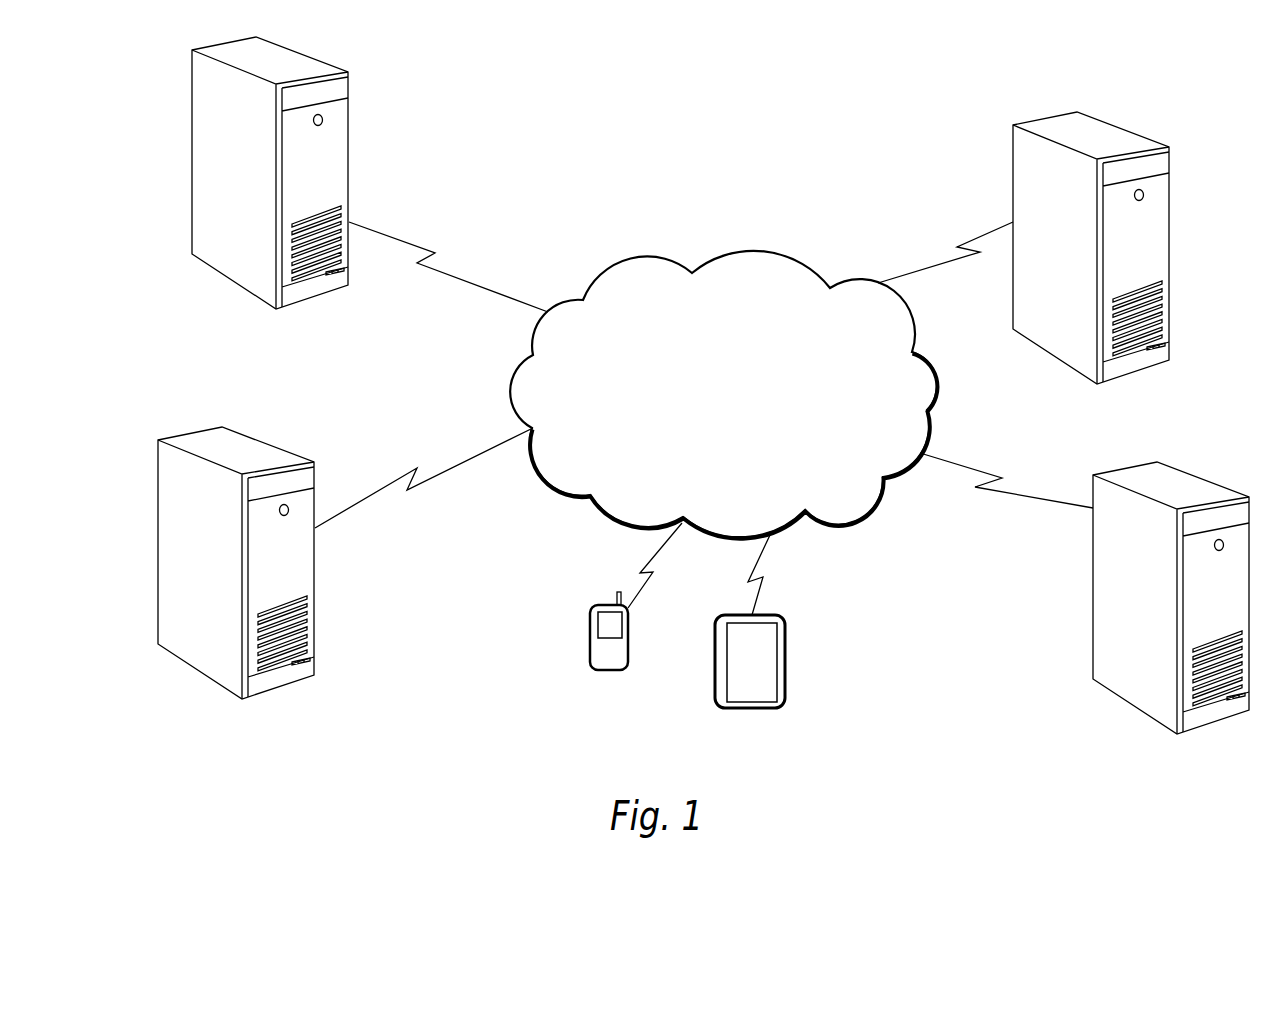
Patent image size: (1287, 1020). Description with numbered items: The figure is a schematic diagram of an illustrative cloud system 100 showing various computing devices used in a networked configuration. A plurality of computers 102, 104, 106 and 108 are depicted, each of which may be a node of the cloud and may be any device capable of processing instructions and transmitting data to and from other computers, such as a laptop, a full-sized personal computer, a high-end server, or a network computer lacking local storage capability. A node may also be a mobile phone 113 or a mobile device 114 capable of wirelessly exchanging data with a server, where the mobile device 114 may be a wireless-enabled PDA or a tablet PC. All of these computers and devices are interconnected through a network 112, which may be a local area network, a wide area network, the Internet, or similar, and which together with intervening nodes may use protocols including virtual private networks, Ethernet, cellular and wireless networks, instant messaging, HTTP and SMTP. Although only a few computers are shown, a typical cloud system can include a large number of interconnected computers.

The cloud system 100 is at (743, 100).
The computer 102 is at (208, 245).
The computer 104 is at (315, 607).
The computer 106 is at (1093, 562).
The computer 108 is at (1170, 272).
The network 112 is at (743, 406).
The mobile phone 113 is at (590, 635).
The mobile device 114 is at (785, 662).